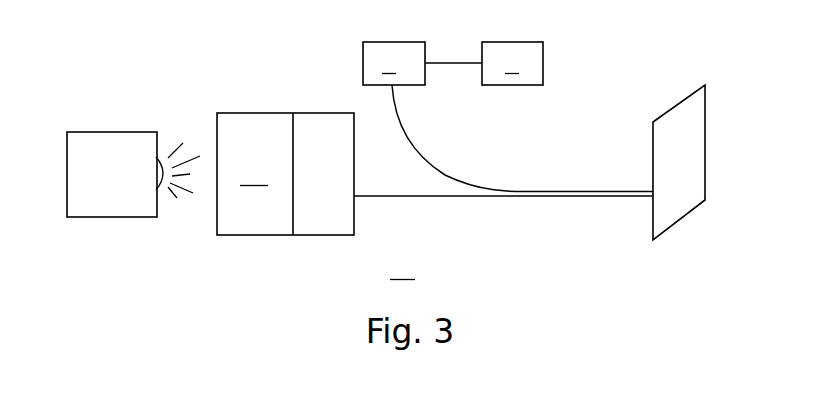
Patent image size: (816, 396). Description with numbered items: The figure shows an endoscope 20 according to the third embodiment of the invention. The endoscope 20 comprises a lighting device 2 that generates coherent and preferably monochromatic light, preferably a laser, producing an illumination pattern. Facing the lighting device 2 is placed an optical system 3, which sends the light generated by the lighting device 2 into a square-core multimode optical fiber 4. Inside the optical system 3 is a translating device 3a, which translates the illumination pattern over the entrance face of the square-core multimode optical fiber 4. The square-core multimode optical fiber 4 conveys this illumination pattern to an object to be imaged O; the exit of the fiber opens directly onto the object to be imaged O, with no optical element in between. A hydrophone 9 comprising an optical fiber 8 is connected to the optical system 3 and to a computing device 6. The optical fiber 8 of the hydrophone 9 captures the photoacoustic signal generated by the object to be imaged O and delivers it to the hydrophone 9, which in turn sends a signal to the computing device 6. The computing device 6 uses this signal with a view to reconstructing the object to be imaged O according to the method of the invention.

The lighting device 2 is at (108, 132).
The optical system 3 is at (285, 133).
The translating device 3a is at (255, 113).
The hydrophone 9 is at (394, 63).
The computing device 6 is at (484, 63).
The optical fiber 8 is at (425, 153).
The square-core multimode optical fiber 4 is at (493, 196).
The object to be imaged O is at (680, 103).
The endoscope 20 is at (402, 269).